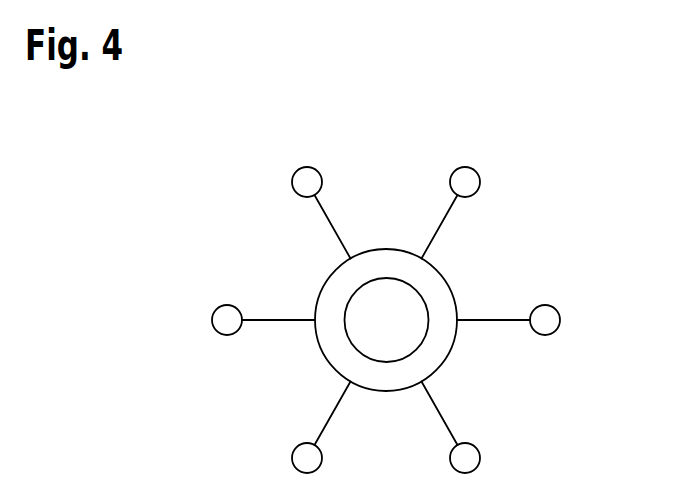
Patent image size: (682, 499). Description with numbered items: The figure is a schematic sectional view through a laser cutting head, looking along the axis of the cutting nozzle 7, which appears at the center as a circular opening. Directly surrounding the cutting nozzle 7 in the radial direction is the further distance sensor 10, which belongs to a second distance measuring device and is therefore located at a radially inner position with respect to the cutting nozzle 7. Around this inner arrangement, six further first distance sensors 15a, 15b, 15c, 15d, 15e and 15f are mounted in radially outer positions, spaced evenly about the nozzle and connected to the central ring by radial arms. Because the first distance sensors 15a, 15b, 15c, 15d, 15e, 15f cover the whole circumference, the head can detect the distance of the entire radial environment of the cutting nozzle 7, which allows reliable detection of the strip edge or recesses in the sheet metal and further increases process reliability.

The further distance sensor 10 is at (417, 277).
The cutting nozzle 7 is at (387, 362).
The first distance sensor 15a is at (218, 320).
The first distance sensor 15b is at (298, 181).
The first distance sensor 15c is at (475, 181).
The first distance sensor 15d is at (555, 319).
The first distance sensor 15e is at (475, 457).
The first distance sensor 15f is at (298, 457).